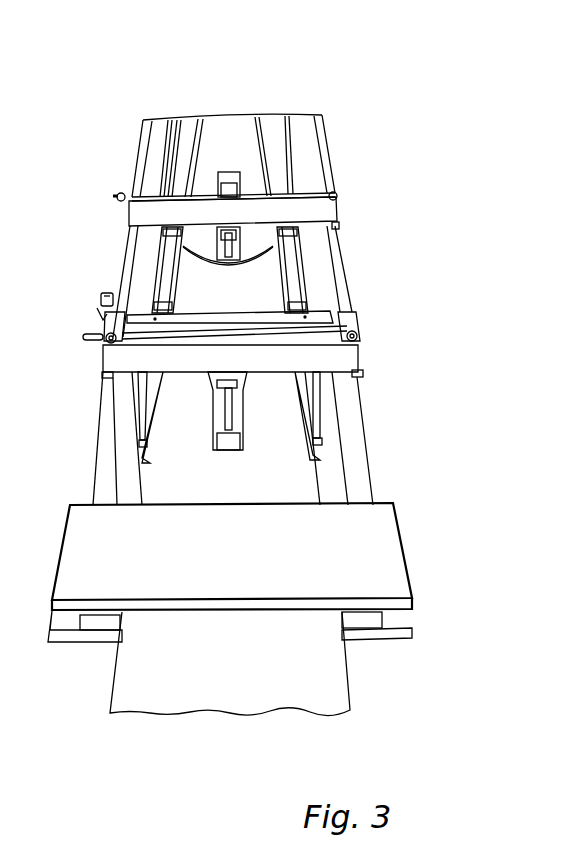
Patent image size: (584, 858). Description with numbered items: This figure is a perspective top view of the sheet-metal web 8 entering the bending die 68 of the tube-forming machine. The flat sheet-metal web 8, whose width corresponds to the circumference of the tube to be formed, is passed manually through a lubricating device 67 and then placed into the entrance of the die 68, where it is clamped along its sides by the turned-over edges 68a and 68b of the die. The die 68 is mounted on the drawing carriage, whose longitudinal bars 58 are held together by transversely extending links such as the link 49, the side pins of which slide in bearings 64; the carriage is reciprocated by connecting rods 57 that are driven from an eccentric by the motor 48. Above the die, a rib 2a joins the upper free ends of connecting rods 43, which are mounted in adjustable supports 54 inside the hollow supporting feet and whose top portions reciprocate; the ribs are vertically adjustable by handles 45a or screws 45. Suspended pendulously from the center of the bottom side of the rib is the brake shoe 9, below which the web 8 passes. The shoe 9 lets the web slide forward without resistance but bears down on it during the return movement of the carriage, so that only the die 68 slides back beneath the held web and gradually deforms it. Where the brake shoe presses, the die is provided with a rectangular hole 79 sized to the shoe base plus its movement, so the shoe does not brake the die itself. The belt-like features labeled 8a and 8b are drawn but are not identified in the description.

The rib 2a is at (327, 212).
The connecting rod 57 is at (171, 123).
The longitudinal bar 58 is at (178, 123).
The turned-over edge of the die 68b is at (200, 123).
The turned-over edge of the die 68a is at (257, 123).
The rectangular hole 79 is at (229, 187).
The connecting rod 43 is at (338, 226).
The brake shoe 9 is at (233, 241).
The belt end 8a is at (278, 250).
The belt loop 8b is at (183, 256).
The transversely extending link 49 is at (342, 318).
The screw 45 is at (357, 337).
The bearing 64 is at (113, 323).
The handle 45a is at (97, 340).
The motor 48 is at (102, 302).
The adjustable support 54 is at (100, 316).
The bending die 68 is at (318, 457).
The lubricating device 67 is at (387, 560).
The sheet-metal web 8 is at (337, 675).